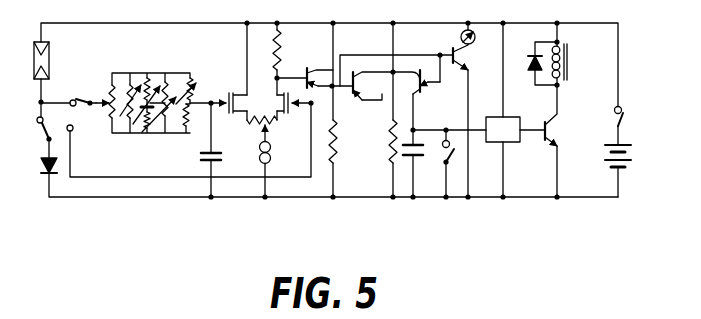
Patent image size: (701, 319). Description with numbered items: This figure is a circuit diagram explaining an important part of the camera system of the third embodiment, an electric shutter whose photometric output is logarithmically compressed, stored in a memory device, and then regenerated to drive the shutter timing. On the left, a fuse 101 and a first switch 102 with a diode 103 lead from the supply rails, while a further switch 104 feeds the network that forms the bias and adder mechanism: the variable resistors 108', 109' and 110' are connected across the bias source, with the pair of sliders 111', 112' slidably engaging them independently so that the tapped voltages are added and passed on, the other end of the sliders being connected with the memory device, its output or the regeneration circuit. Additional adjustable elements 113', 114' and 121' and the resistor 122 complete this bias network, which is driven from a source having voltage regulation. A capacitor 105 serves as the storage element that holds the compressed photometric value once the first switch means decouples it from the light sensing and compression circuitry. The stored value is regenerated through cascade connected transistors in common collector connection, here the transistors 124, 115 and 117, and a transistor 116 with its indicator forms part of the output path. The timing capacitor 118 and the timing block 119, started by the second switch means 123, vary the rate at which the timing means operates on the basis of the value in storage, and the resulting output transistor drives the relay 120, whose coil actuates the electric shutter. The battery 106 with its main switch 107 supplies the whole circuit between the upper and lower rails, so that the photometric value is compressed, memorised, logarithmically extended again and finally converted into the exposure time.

The fuse 101 is at (24, 60).
The switch 102 is at (29, 131).
The diode 103 is at (33, 168).
The switch 104 is at (97, 99).
The capacitor 105 is at (223, 150).
The battery 106 is at (629, 169).
The switch 107 is at (633, 123).
The resistor 108' is at (175, 73).
The resistor 109' is at (91, 78).
The resistor 110' is at (205, 72).
The slider 111' is at (98, 116).
The slider 112' is at (183, 125).
The variable resistor 113' is at (147, 77).
The variable resistor 114' is at (155, 132).
The transistor 115 is at (362, 86).
The transistor with indicator 116 is at (475, 46).
The transistor 117 is at (421, 89).
The capacitor 118 is at (421, 163).
The timing circuit block 119 is at (513, 142).
The relay coil 120 is at (564, 63).
The variable resistor 121' is at (122, 77).
The resistor 122 is at (180, 114).
The switch 123 is at (456, 163).
The transistor 124 is at (316, 67).